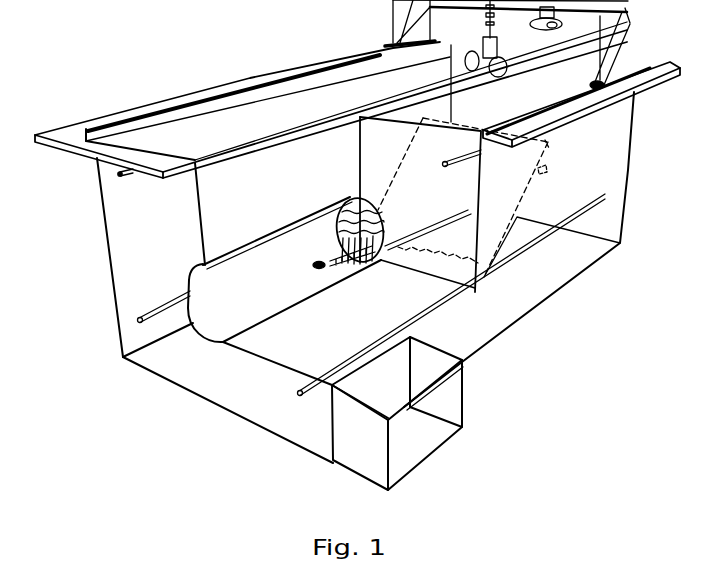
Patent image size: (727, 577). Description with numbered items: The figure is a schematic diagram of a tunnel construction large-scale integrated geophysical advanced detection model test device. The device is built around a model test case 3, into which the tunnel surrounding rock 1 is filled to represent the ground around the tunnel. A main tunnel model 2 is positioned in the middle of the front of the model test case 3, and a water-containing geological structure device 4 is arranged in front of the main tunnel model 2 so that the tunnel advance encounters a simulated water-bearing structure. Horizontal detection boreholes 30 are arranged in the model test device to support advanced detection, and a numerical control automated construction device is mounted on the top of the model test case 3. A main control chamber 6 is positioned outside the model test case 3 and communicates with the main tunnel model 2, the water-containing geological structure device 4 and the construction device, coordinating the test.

The tunnel surrounding rock 1 is at (334, 231).
The main tunnel model 2 is at (329, 268).
The model test case 3 is at (581, 169).
The water-containing geological structure device 4 is at (454, 204).
The main control chamber 6 is at (397, 413).
The horizontal detection boreholes 30 is at (122, 187).